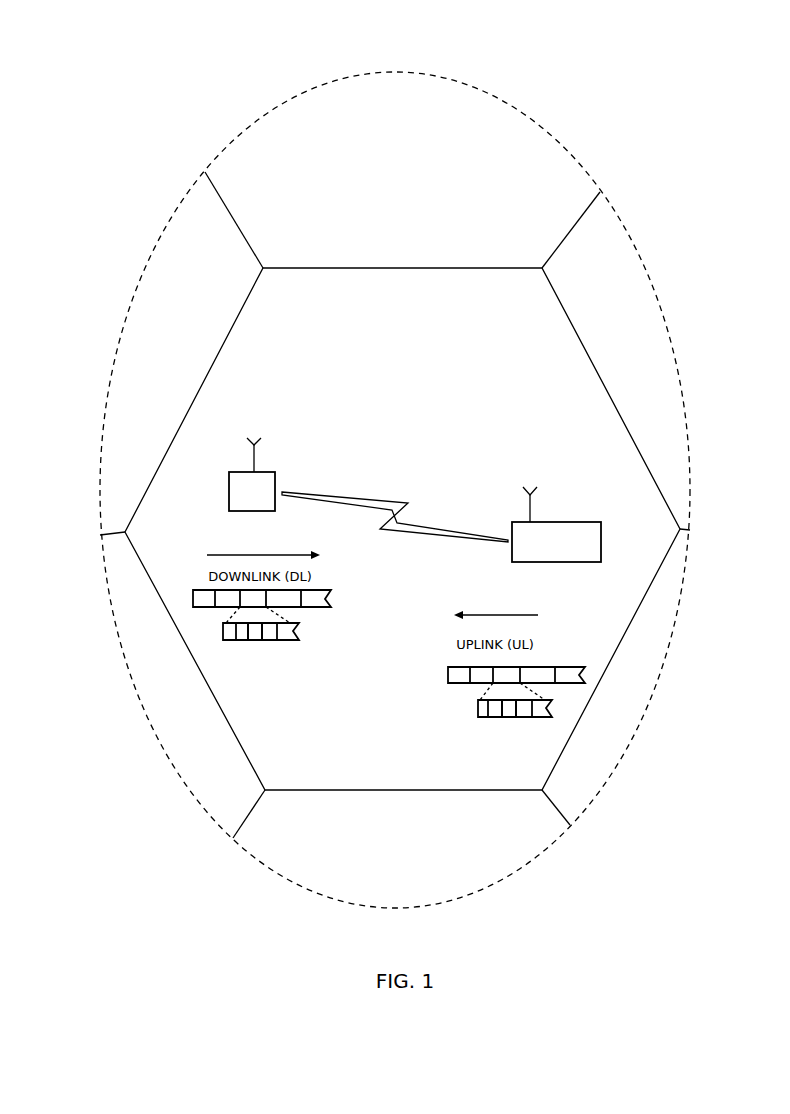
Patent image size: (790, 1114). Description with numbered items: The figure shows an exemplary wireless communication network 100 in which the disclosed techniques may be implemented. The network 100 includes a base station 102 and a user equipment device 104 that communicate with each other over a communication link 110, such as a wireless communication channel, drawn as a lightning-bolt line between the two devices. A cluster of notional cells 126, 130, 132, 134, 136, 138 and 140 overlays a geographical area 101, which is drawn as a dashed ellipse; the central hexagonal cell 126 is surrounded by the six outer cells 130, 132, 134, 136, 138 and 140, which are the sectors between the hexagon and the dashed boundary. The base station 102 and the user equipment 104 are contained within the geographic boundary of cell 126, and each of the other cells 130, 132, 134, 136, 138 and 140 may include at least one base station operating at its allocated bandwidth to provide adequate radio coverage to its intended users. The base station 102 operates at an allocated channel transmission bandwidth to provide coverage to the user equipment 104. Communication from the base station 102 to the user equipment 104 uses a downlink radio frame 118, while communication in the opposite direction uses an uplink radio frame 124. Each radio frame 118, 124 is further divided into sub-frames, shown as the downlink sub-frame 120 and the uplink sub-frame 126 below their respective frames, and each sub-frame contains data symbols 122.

The wireless communication network 100 is at (354, 36).
The geographical area 101 is at (511, 95).
The base station 102 is at (229, 485).
The user equipment device 104 is at (573, 520).
The communication link 110 is at (393, 492).
The downlink radio frame 118 is at (194, 600).
The sub-frame 120 is at (223, 631).
The data symbols 122 is at (265, 630).
The uplink radio frame 124 is at (562, 660).
The cell 126 is at (295, 327).
The cell 130 is at (172, 233).
The cell 132 is at (277, 128).
The cell 134 is at (617, 258).
The cell 136 is at (593, 772).
The cell 138 is at (303, 853).
The cell 140 is at (173, 738).